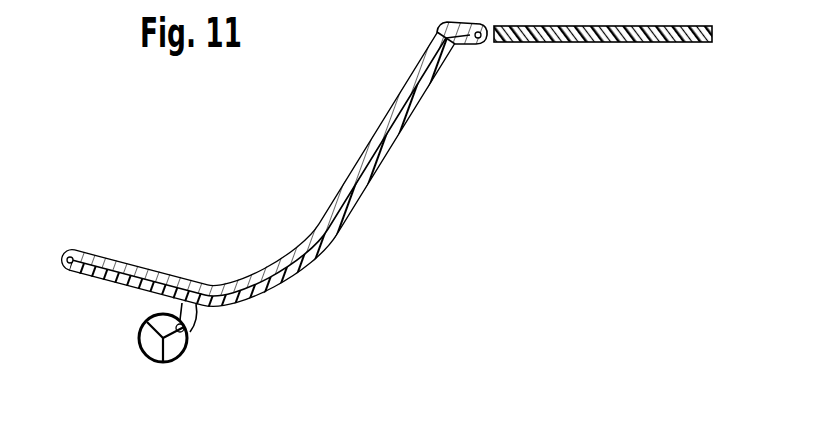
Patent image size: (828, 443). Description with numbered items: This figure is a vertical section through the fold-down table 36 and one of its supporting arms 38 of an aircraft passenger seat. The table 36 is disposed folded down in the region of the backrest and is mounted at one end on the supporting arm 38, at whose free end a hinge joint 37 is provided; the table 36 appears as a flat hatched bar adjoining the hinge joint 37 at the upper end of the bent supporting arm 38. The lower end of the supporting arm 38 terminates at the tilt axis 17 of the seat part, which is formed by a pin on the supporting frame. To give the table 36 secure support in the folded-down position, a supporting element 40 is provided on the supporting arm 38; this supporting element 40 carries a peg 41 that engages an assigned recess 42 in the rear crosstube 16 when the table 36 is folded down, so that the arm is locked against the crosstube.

The rear crosstube 16 is at (141, 345).
The tilt axis 17 is at (68, 248).
The table 36 is at (652, 42).
The hinge joint 37 is at (488, 40).
The supporting arm 38 is at (387, 157).
The supporting element 40 is at (193, 318).
The peg 41 is at (185, 347).
The recess 42 is at (152, 316).